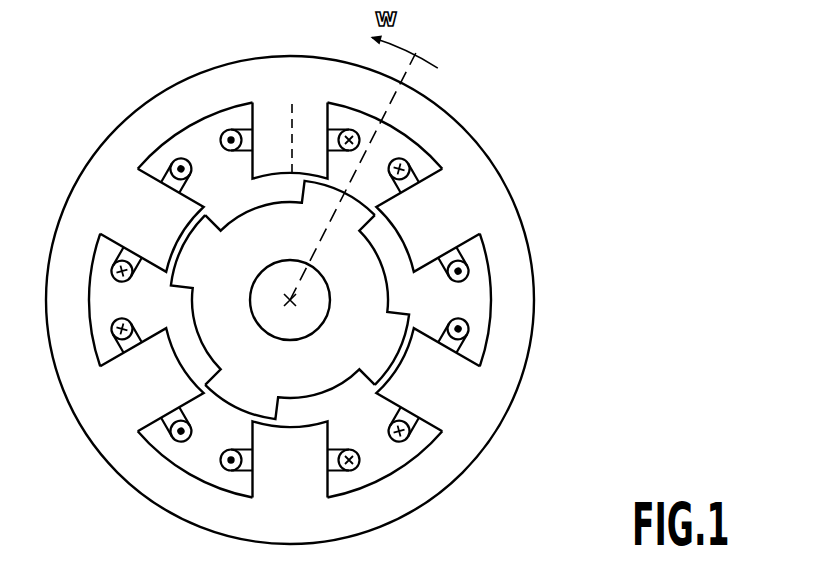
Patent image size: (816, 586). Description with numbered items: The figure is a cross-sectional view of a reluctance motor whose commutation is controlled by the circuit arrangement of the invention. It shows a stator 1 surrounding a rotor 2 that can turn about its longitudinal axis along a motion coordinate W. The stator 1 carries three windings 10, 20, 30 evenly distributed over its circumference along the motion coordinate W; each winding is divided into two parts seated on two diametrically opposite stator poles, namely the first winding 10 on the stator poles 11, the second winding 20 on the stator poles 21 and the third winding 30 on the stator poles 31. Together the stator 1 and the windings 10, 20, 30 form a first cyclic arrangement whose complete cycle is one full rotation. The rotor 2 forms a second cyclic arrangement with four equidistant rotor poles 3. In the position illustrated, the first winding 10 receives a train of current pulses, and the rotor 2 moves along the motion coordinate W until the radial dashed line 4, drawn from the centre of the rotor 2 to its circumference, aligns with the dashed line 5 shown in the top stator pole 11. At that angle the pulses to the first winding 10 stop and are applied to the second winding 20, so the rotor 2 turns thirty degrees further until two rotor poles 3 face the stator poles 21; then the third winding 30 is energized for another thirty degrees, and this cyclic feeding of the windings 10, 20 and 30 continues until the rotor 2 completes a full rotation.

The stator 1 is at (512, 255).
The rotor 2 is at (306, 300).
The rotor poles 3 is at (290, 300).
The radial dashed line 4 is at (405, 76).
The dashed line 5 is at (293, 116).
The first winding 10 is at (240, 128).
The stator poles 11 is at (290, 300).
The second winding 20 is at (412, 172).
The stator poles 21 is at (290, 300).
The third winding 30 is at (448, 347).
The stator poles 31 is at (290, 300).